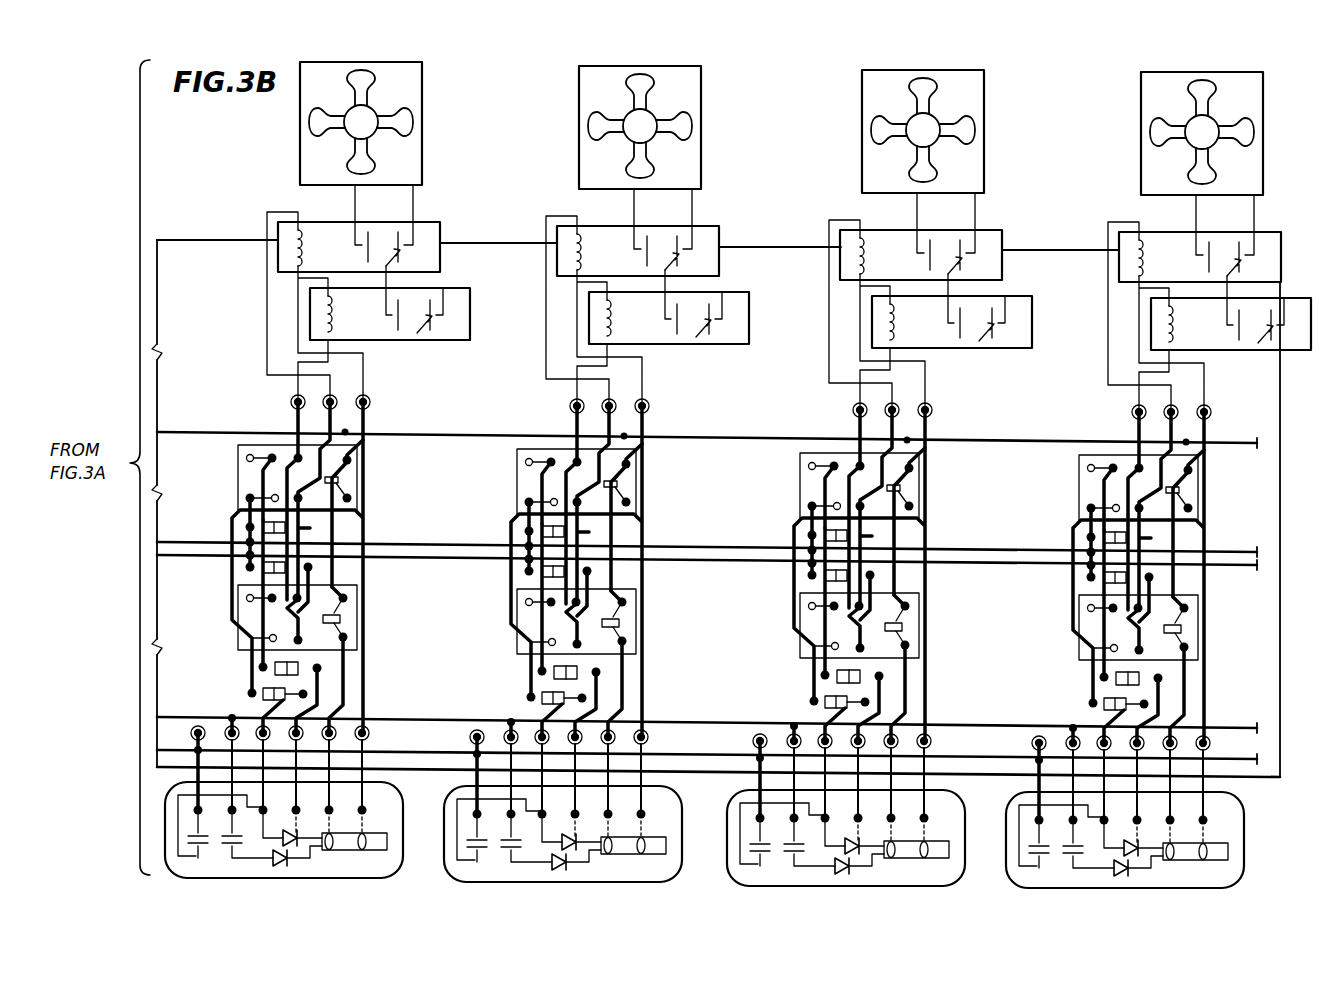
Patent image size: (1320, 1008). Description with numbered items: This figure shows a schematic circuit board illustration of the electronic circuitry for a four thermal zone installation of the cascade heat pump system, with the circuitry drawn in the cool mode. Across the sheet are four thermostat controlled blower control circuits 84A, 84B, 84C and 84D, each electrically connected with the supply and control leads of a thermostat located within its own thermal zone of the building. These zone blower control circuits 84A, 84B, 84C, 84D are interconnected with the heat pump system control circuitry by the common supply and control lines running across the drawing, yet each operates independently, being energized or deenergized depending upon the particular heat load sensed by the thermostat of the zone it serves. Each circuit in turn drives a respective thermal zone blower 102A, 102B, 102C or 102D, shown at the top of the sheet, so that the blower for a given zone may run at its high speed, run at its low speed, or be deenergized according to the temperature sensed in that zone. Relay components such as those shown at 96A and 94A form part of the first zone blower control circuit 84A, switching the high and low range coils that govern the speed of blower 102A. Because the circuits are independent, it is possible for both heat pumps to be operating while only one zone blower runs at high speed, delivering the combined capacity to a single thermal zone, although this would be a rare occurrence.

The thermal zone blower 102A is at (423, 118).
The thermal zone blower 102B is at (679, 168).
The thermal zone blower 102C is at (965, 172).
The thermal zone blower 102D is at (1157, 174).
The blower control circuit 84A is at (385, 416).
The blower control circuit 84B is at (647, 316).
The blower control circuit 84C is at (930, 321).
The blower control circuit 84D is at (1209, 323).
The relay 96A is at (359, 490).
The relay 94A is at (358, 623).